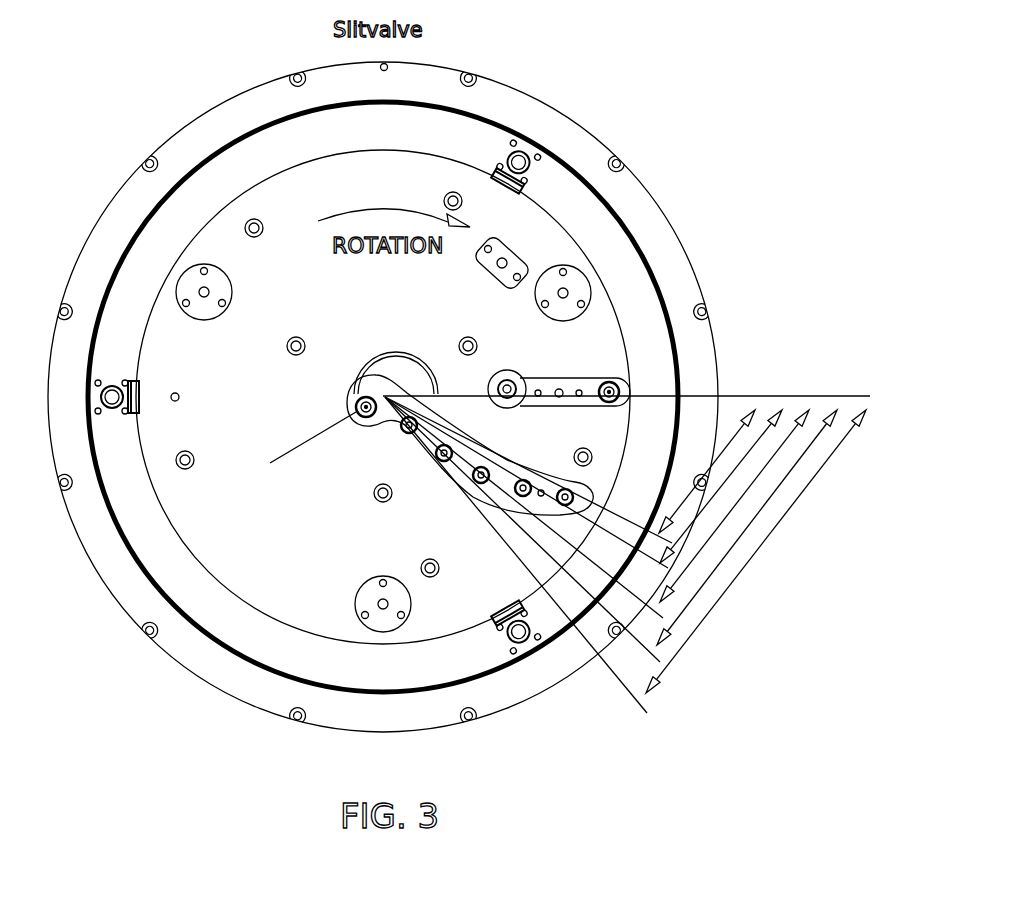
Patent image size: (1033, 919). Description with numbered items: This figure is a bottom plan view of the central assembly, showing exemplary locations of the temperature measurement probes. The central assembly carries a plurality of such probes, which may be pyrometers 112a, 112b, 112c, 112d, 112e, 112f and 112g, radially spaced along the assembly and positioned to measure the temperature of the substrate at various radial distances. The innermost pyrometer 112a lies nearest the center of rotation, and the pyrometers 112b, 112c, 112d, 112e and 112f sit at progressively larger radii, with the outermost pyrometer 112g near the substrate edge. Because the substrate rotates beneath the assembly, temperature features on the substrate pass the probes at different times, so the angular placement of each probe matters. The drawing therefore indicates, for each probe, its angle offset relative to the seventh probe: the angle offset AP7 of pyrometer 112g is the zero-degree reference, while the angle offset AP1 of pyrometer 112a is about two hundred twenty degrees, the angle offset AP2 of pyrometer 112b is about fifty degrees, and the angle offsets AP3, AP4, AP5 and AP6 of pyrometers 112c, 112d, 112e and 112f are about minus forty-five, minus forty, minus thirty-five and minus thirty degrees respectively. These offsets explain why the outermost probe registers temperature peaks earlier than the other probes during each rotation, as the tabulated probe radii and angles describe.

The pyrometer 112a is at (356, 403).
The pyrometer 112b is at (401, 430).
The pyrometer 112c is at (436, 457).
The pyrometer 112d is at (477, 483).
The pyrometer 112e is at (526, 480).
The pyrometer 112f is at (582, 490).
The pyrometer 112g is at (616, 380).
The angle offset of probe one AP1 is at (312, 438).
The angle offset of probe two AP2 is at (636, 720).
The angle offset of probe three AP3 is at (641, 665).
The angle offset of probe four AP4 is at (530, 553).
The angle offset of probe five AP5 is at (518, 527).
The angle offset of probe six AP6 is at (434, 414).
The angle offset of probe seven AP7 is at (815, 395).